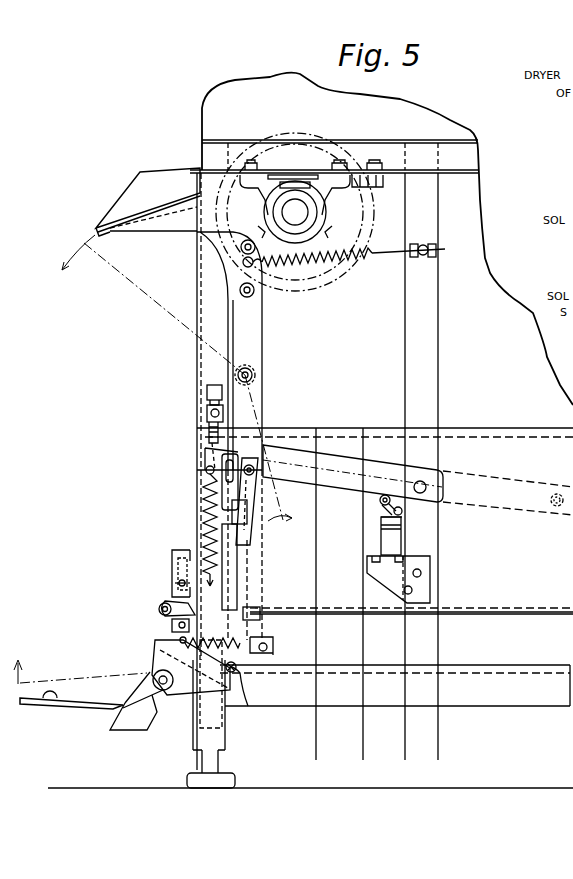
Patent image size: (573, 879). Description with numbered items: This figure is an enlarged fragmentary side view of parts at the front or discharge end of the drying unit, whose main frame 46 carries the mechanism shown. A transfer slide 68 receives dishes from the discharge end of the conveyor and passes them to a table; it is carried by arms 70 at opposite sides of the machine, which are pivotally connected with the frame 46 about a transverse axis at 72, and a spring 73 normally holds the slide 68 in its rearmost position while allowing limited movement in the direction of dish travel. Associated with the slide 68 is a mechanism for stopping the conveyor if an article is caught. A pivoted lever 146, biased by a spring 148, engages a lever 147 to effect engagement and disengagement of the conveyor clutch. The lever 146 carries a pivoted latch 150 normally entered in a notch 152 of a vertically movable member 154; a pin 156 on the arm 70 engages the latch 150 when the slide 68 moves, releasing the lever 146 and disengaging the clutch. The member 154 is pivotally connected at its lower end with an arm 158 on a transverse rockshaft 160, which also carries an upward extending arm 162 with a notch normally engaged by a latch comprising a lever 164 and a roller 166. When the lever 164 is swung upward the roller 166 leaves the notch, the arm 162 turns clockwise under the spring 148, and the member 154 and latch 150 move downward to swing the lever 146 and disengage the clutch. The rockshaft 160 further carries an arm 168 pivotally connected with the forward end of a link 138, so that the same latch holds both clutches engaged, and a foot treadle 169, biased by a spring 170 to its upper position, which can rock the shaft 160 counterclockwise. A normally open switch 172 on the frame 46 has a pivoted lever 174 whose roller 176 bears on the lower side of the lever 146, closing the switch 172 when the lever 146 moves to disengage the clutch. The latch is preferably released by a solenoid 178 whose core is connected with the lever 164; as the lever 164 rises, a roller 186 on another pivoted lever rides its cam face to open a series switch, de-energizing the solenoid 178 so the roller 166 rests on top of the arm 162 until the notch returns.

The main frame 46 is at (207, 412).
The transfer slide 68 is at (120, 205).
The arm 70 is at (248, 320).
The transverse axis 72 is at (255, 371).
The spring 73 is at (322, 266).
The link 138 is at (490, 612).
The pivoted lever 146 is at (373, 473).
The lever 147 is at (556, 507).
The spring 148 is at (212, 492).
The pivoted latch 150 is at (262, 492).
The notch 152 is at (238, 526).
The vertically movable member 154 is at (236, 563).
The pin 156 is at (262, 505).
The arm 158 is at (211, 714).
The transverse rockshaft 160 is at (161, 705).
The upward extending arm 162 is at (166, 642).
The lever 164 is at (240, 631).
The roller 166 is at (172, 627).
The arm 168 is at (159, 615).
The foot treadle 169 is at (52, 705).
The spring 170 is at (245, 694).
The switch 172 is at (384, 543).
The pivoted lever 174 is at (388, 498).
The roller 176 is at (381, 501).
The solenoid 178 is at (186, 571).
The roller 186 is at (175, 583).